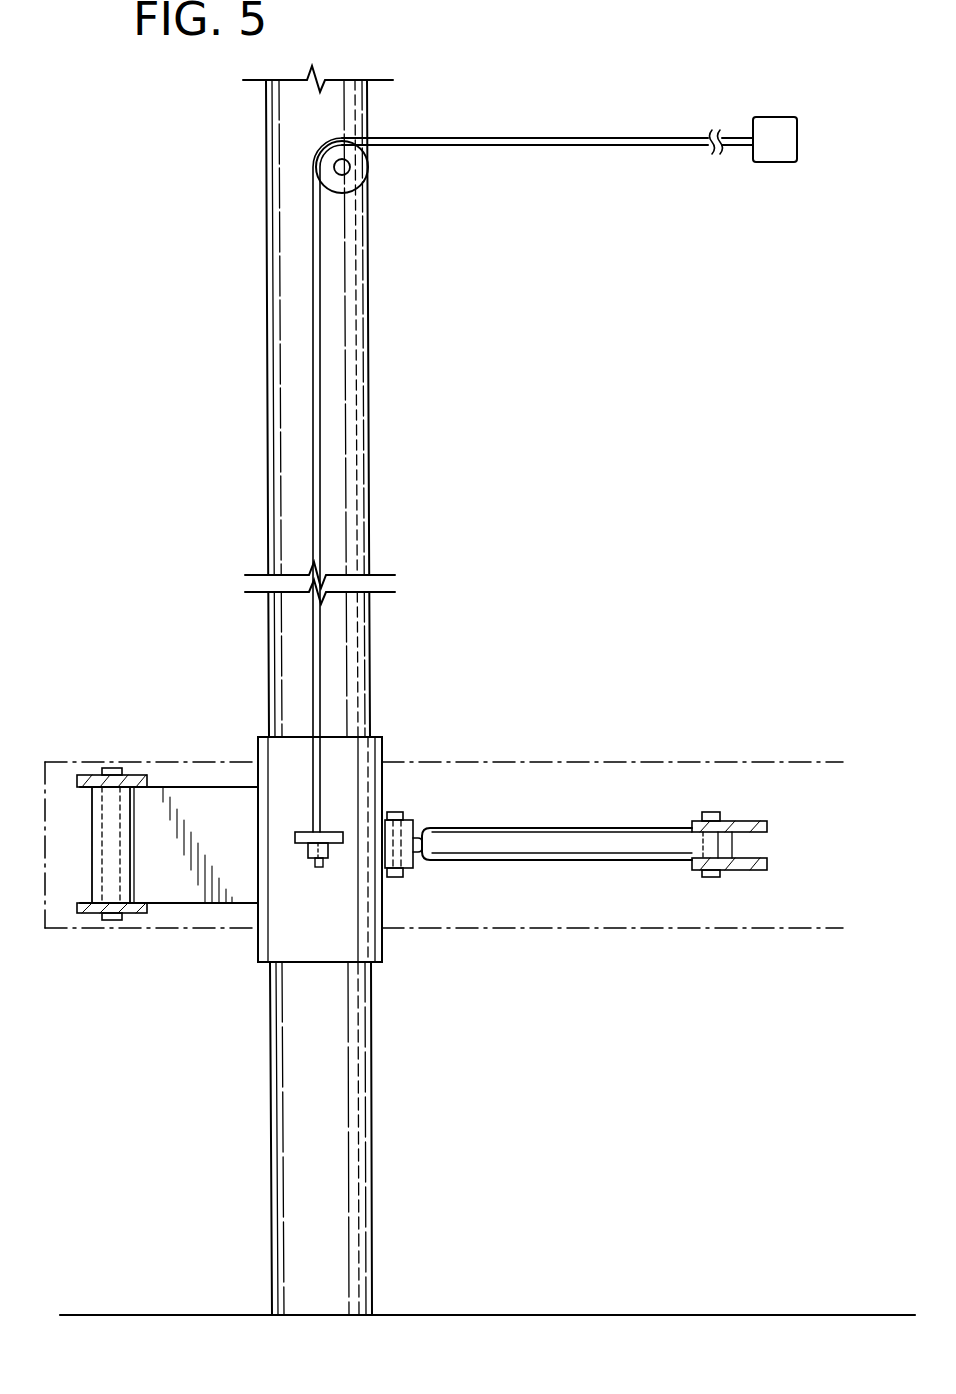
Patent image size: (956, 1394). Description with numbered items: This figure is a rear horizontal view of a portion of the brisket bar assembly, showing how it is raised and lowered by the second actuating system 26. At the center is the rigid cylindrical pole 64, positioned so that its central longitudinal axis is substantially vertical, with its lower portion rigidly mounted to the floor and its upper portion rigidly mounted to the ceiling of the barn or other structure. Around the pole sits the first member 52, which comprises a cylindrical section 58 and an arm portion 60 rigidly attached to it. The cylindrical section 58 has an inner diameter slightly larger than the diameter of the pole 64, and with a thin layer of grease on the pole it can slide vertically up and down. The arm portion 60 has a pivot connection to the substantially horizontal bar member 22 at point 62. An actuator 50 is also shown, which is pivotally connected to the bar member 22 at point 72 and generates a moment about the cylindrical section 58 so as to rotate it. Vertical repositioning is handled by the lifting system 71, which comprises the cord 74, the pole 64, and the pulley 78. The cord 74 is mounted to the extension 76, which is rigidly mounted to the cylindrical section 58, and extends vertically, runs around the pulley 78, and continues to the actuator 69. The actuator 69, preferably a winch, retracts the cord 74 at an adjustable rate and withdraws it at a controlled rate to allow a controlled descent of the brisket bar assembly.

The bar member 22 is at (575, 760).
The second actuating system 26 is at (495, 582).
The actuator 50 is at (545, 838).
The first member 52 is at (222, 797).
The cylindrical section 58 is at (362, 768).
The arm portion 60 is at (178, 797).
The pivot connection point 62 is at (112, 770).
The rigid cylindrical pole 64 is at (352, 296).
The actuator 69 is at (770, 122).
The lifting system 71 is at (510, 123).
The pivot connection point 72 is at (710, 815).
The cord 74 is at (313, 342).
The extension 76 is at (335, 832).
The pulley 78 is at (357, 170).